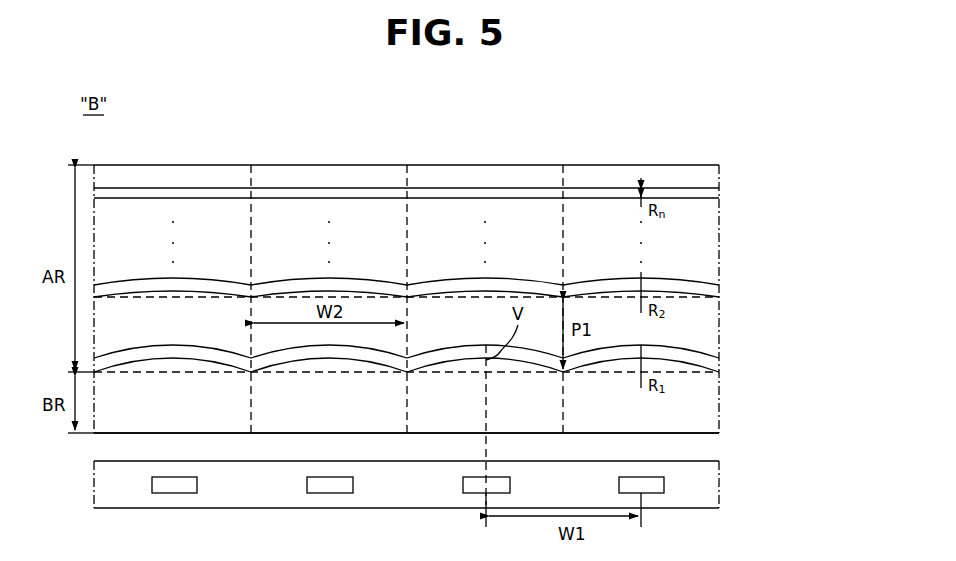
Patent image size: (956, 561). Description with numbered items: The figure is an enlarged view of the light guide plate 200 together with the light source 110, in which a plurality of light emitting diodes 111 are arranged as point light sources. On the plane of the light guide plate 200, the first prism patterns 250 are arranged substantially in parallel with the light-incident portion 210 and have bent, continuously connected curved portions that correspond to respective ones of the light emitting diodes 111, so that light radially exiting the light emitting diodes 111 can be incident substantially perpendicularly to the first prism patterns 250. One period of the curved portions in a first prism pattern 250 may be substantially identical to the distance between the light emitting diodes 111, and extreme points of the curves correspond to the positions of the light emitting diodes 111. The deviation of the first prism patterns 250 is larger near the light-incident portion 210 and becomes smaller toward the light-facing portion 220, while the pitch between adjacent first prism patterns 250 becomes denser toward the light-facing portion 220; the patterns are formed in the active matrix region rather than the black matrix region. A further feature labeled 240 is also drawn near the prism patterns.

The light source 110 is at (466, 509).
The light emitting diode 111 is at (328, 490).
The light guide plate 200 is at (738, 243).
The light-incident portion 210 is at (708, 433).
The light-facing portion 220 is at (706, 165).
The lens pattern 240 is at (719, 327).
The first prism pattern 250 is at (719, 360).